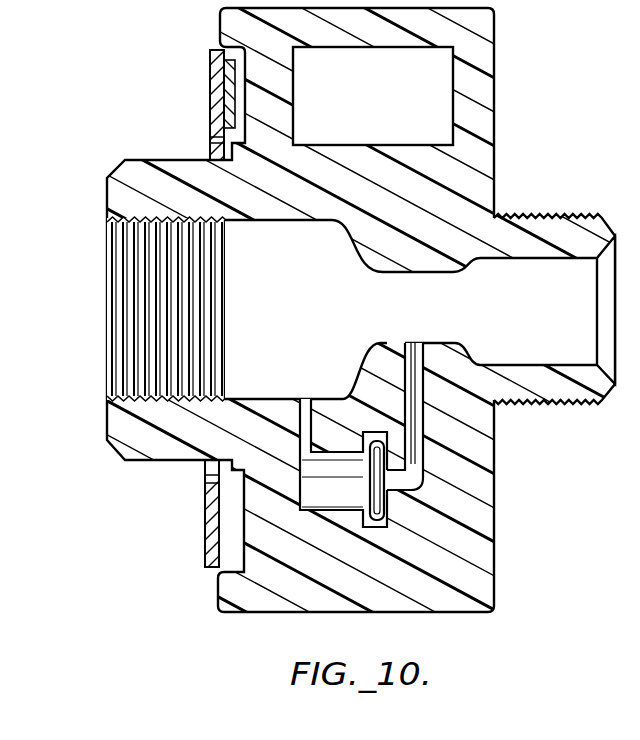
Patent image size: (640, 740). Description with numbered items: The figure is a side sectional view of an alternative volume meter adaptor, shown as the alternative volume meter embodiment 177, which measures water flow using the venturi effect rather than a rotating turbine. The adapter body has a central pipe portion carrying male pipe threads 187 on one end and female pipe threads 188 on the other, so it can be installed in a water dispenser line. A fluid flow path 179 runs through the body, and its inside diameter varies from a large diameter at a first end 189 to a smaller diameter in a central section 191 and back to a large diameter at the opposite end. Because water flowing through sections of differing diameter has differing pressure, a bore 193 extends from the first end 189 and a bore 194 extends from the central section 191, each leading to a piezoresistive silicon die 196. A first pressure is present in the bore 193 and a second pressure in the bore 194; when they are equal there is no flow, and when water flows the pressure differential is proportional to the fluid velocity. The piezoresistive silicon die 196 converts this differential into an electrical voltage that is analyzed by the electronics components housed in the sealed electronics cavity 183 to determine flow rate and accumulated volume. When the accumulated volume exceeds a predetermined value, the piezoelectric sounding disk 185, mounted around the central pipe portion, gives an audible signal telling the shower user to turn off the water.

The alternative volume meter embodiment 177 is at (531, 137).
The fluid flow path 179 is at (558, 324).
The sealed electronics cavity 183 is at (382, 109).
The piezoelectric sounding disk 185 is at (210, 95).
The male pipe threads 187 is at (565, 216).
The female pipe threads 188 is at (188, 215).
The first end 189 is at (290, 322).
The central section 191 is at (426, 322).
The bore 193 is at (303, 399).
The bore 194 is at (420, 418).
The piezoresistive silicon die 196 is at (395, 490).